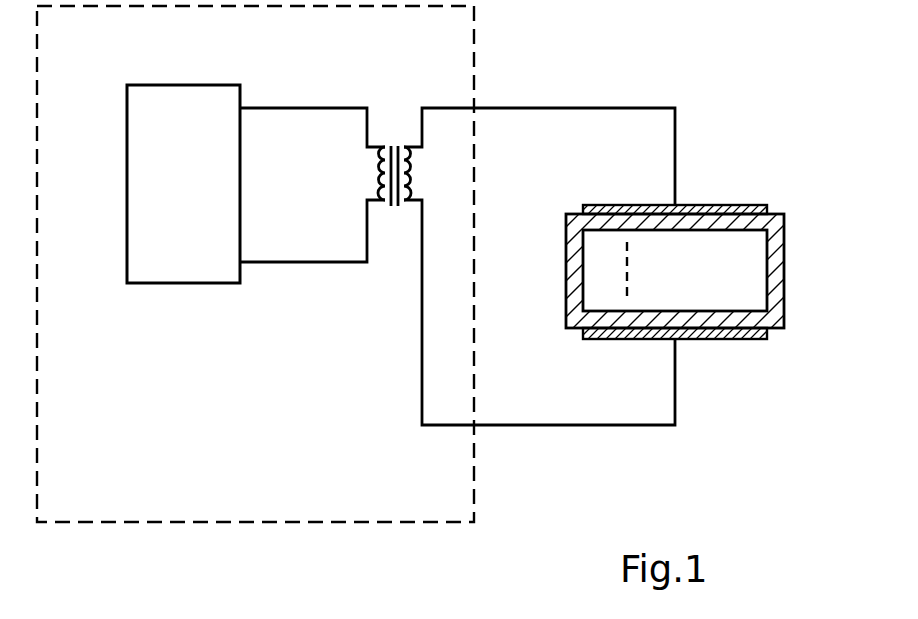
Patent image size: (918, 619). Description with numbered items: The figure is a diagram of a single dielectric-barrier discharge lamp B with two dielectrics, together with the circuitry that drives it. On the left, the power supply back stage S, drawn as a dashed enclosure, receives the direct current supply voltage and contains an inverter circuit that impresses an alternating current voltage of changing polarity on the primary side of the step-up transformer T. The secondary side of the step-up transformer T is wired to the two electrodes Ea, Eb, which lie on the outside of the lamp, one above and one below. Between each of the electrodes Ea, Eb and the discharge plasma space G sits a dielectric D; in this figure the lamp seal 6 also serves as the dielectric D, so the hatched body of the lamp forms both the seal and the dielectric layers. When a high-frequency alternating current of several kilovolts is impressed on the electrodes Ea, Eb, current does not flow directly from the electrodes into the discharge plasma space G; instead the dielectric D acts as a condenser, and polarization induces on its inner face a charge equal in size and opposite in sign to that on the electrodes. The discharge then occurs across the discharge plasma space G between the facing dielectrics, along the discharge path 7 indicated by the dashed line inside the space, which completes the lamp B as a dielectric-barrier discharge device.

The power supply back stage S is at (475, 62).
The step-up transformer T is at (393, 138).
The dielectric-barrier discharge lamp B is at (674, 273).
The lamp seal 6 is at (571, 298).
The discharge path 7 is at (615, 262).
The discharge plasma space G is at (746, 256).
The dielectric D is at (738, 225).
The electrode Ea is at (709, 206).
The electrode Eb is at (706, 339).